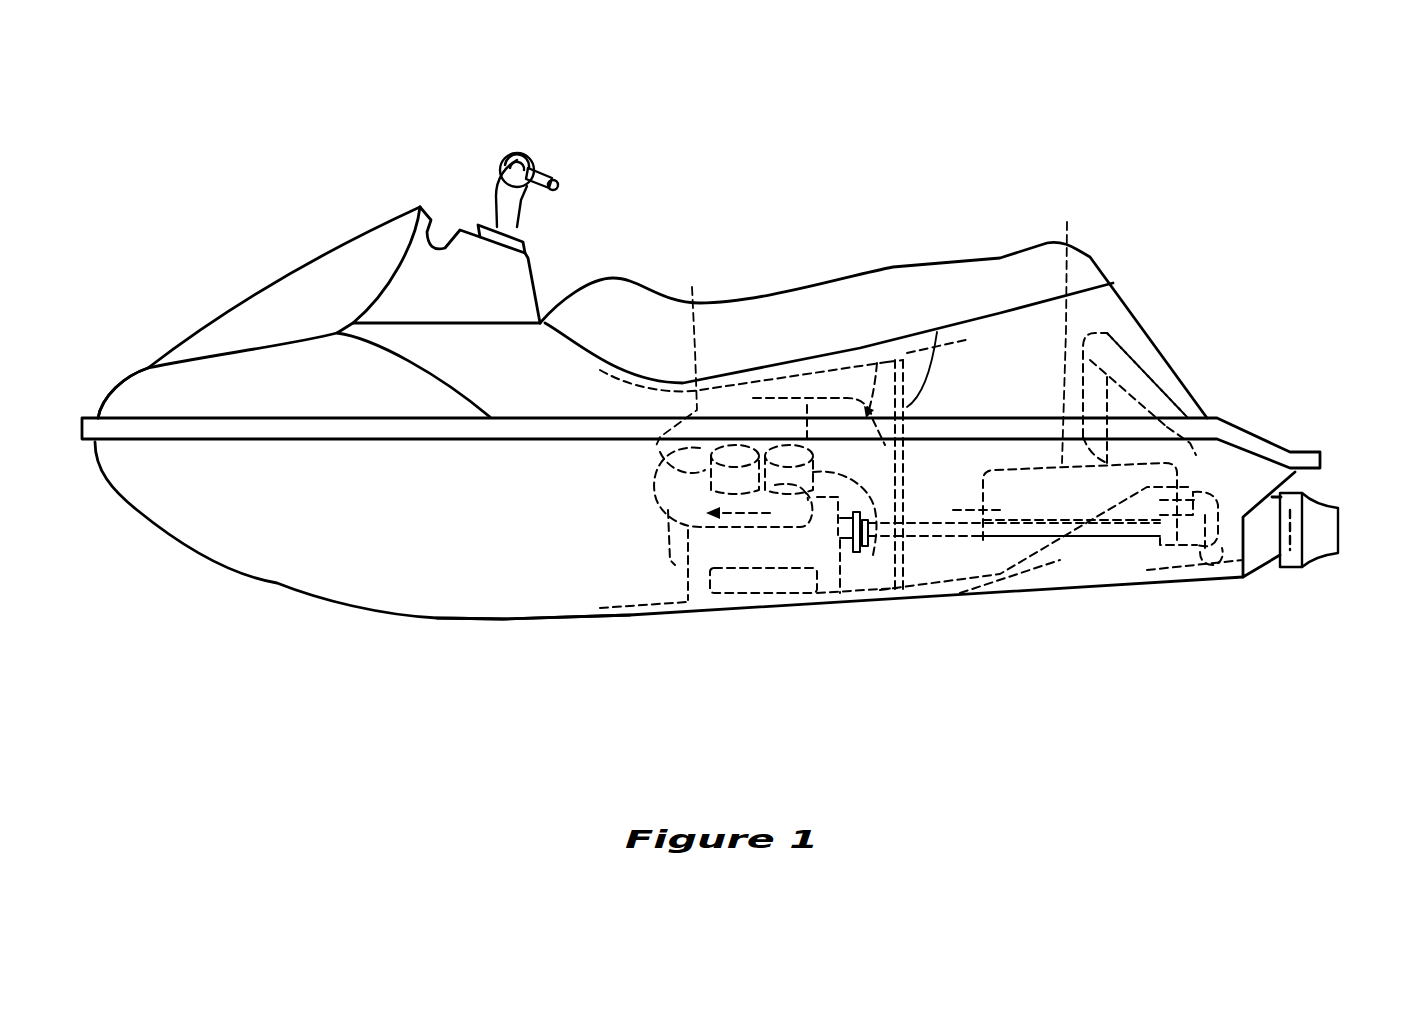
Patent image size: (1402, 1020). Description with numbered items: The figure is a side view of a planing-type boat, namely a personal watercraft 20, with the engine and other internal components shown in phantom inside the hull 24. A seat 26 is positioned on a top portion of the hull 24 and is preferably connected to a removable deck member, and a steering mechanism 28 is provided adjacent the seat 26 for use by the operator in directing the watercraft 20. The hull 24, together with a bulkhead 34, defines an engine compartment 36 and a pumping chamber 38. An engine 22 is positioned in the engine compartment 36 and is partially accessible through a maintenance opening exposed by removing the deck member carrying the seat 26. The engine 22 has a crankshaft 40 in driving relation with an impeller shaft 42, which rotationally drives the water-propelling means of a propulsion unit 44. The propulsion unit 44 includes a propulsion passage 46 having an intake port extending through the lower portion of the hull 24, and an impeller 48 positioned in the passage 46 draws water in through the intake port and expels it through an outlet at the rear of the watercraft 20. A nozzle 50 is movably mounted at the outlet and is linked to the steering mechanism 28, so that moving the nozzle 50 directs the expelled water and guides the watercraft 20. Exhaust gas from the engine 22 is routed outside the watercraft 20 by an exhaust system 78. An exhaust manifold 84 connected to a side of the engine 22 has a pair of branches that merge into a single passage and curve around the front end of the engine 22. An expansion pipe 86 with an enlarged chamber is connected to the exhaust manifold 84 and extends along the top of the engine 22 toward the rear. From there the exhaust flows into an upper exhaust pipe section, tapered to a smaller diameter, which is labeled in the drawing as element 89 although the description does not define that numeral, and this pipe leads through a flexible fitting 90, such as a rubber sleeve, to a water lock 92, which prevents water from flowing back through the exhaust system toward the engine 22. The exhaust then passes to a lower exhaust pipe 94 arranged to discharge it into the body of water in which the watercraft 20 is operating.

The personal watercraft 20 is at (398, 133).
The engine 22 is at (733, 580).
The hull 24 is at (277, 570).
The seat 26 is at (870, 297).
The steering mechanism 28 is at (553, 173).
The bulkhead 34 is at (937, 332).
The engine compartment 36 is at (537, 587).
The pumping chamber 38 is at (1090, 313).
The crankshaft 40 is at (853, 560).
The impeller shaft 42 is at (1025, 577).
The propulsion unit 44 is at (955, 468).
The propulsion passage 46 is at (1101, 575).
The impeller 48 is at (1220, 557).
The nozzle 50 is at (1327, 520).
The exhaust system 78 is at (762, 386).
The exhaust manifold 84 is at (645, 512).
The expansion pipe 86 is at (679, 351).
The ventilation duct 89 is at (887, 347).
The flexible fitting 90 is at (933, 540).
The water lock 92 is at (1059, 325).
The lower exhaust pipe 94 is at (1160, 385).